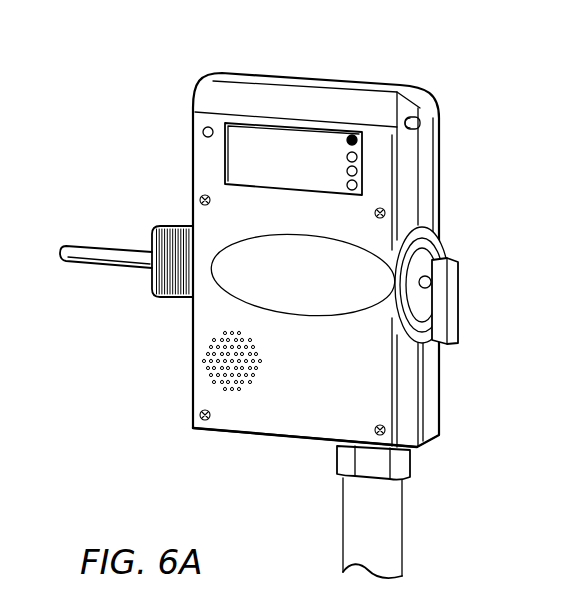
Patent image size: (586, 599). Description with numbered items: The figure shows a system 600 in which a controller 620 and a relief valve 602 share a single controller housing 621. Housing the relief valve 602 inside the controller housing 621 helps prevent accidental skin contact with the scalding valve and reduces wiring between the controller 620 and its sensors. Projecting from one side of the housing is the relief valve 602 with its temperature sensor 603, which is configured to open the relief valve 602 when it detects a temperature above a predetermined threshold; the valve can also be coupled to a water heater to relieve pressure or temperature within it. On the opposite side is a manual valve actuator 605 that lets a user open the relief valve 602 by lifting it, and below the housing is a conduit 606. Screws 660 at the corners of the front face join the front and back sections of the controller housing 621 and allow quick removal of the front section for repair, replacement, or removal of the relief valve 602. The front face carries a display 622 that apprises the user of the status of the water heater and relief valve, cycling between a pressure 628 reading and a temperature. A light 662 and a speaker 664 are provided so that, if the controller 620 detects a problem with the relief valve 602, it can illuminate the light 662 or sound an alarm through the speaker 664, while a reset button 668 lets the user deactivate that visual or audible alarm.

The system 600 is at (148, 49).
The relief valve 602 is at (163, 298).
The temperature sensor 603 is at (97, 262).
The manual valve actuator 605 is at (457, 318).
The conduit 606 is at (390, 550).
The controller 620 is at (455, 420).
The controller housing 621 is at (440, 376).
The display 622 is at (237, 148).
The pressure 628 is at (297, 140).
The screws 660 is at (200, 200).
The light 662 is at (203, 130).
The speaker 664 is at (227, 366).
The reset button 668 is at (423, 124).